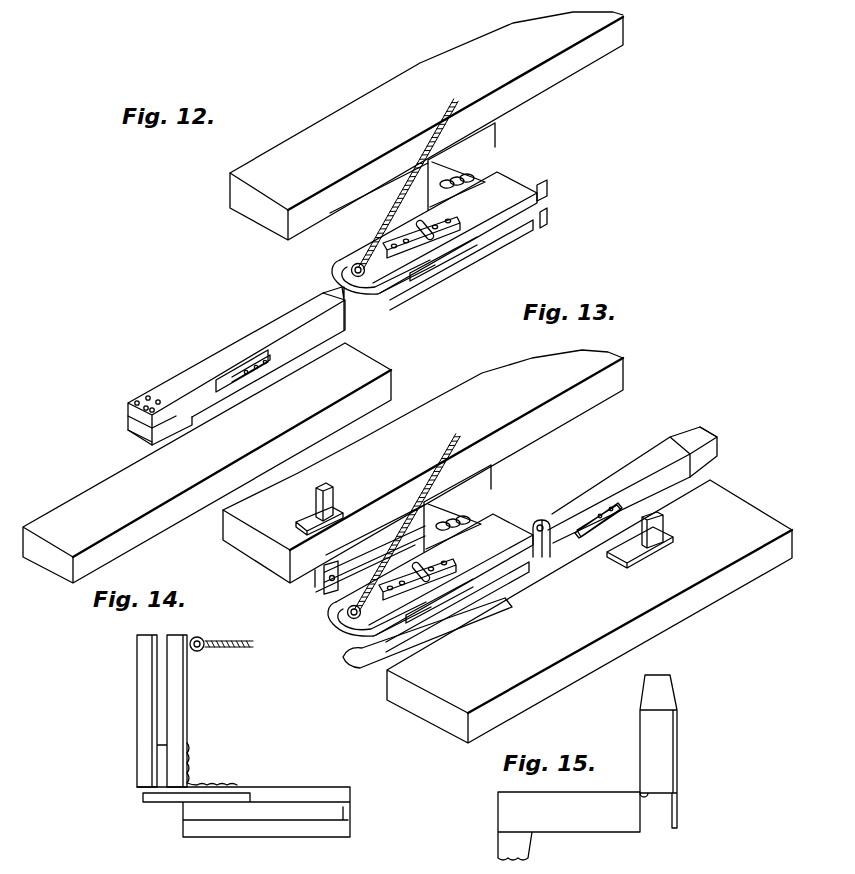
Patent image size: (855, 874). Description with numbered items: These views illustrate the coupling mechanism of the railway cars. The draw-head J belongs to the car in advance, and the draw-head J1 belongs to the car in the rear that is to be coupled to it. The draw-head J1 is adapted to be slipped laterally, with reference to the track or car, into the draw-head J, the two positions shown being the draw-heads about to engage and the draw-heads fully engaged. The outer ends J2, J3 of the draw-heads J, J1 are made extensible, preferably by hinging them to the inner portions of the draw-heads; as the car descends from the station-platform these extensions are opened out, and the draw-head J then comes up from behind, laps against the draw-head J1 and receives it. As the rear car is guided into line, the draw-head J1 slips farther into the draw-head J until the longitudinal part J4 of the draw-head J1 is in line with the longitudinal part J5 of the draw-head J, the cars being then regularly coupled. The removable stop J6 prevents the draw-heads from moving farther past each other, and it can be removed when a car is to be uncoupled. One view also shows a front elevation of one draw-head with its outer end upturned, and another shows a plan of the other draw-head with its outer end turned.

In FIG. 12, the draw-head J is at (438, 223).
In FIG. 13, the draw-head J is at (424, 586).
In FIG. 14, the draw-head J is at (243, 802).
In FIG. 12, the draw-head J1 is at (236, 369).
In FIG. 13, the draw-head J1 is at (627, 485).
In FIG. 15, the draw-head J1 is at (569, 812).
In FIG. 12, the outer end of draw-head J J2 is at (365, 241).
In FIG. 13, the outer end of draw-head J J2 is at (345, 619).
In FIG. 14, the outer end of draw-head J J2 is at (136, 678).
In FIG. 12, the outer end of draw-head J' J3 is at (308, 306).
In FIG. 13, the outer end of draw-head J' J3 is at (664, 452).
In FIG. 15, the outer end of draw-head J' J3 is at (640, 729).
In FIG. 12, the longitudinal part of draw-head J' J4 is at (232, 432).
In FIG. 13, the longitudinal part of draw-head J' J4 is at (597, 575).
In FIG. 12, the longitudinal part of draw-head J J5 is at (461, 166).
In FIG. 13, the longitudinal part of draw-head J J5 is at (334, 494).
In FIG. 13, the removable stop J6 is at (533, 533).